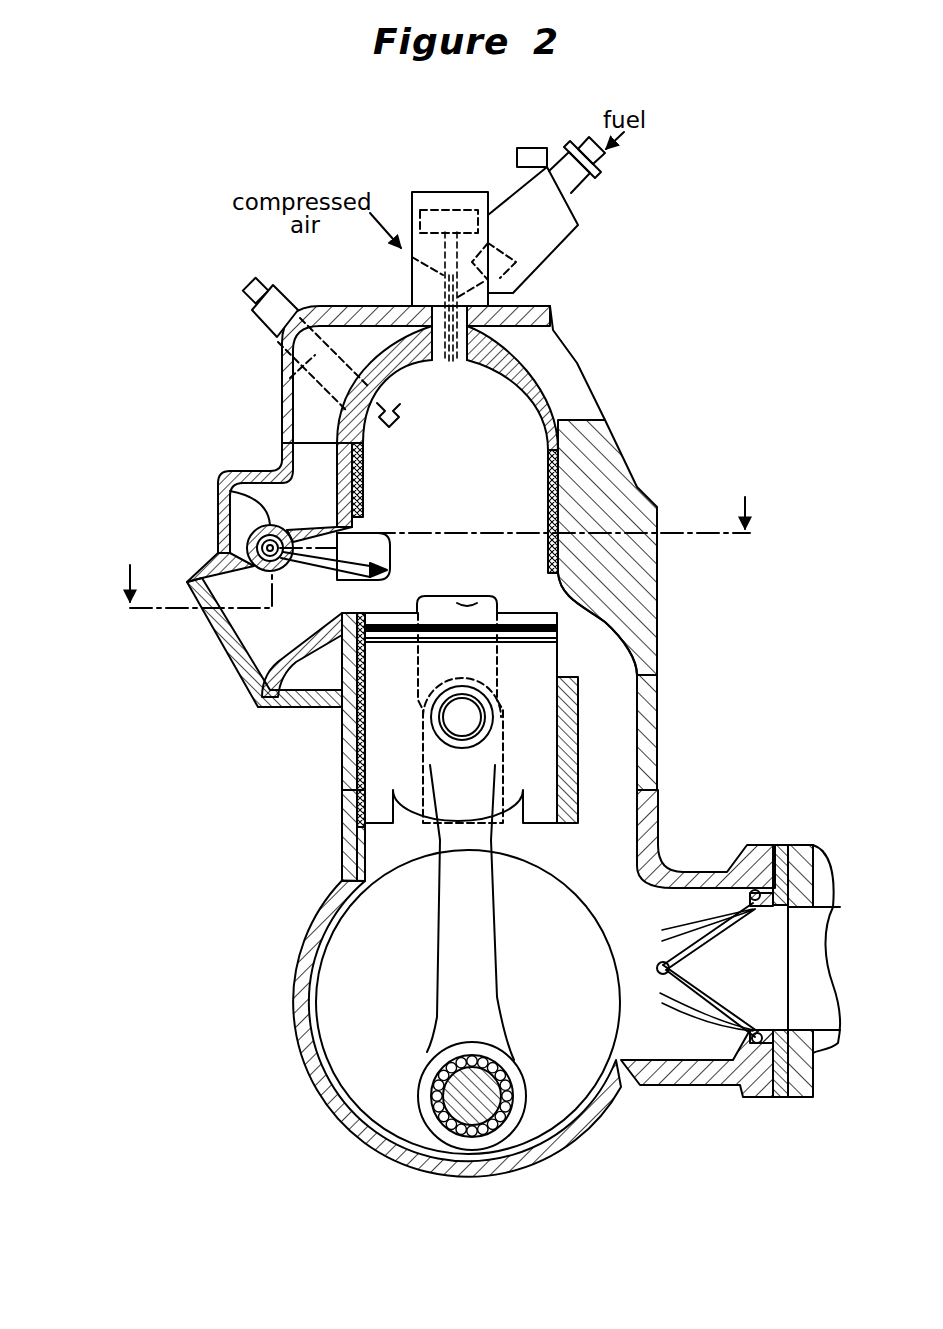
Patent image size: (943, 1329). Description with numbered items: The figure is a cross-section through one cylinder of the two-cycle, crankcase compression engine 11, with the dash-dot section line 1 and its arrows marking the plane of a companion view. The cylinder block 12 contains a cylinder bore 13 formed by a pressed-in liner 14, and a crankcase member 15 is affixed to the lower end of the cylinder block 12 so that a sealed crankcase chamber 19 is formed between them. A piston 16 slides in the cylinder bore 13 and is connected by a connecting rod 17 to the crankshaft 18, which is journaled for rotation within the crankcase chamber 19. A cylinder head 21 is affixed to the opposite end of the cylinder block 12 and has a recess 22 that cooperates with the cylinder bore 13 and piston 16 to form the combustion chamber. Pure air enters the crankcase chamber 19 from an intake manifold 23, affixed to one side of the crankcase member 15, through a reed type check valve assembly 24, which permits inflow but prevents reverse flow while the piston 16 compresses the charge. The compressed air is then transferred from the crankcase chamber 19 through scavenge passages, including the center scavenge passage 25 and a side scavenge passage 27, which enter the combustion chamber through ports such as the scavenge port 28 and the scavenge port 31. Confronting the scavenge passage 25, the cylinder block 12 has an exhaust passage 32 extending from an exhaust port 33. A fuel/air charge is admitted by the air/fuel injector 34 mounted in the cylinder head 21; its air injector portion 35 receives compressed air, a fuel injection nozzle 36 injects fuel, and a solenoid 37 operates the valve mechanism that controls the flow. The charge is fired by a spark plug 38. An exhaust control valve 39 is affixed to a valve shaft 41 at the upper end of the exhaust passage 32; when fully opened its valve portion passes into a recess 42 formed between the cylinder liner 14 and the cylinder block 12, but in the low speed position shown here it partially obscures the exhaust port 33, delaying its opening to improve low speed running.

The engine 11 is at (682, 407).
The cylinder block 12 is at (342, 752).
The cylinder bore 13 is at (548, 457).
The cylinder liner 14 is at (562, 493).
The crankcase member 15 is at (296, 972).
The piston 16 is at (338, 867).
The connecting rod 17 is at (437, 937).
The crankshaft 18 is at (612, 1045).
The crankcase chamber 19 is at (330, 1046).
The cylinder head 21 is at (282, 412).
The recess 22 is at (474, 436).
The intake manifold 23 is at (803, 863).
The reed type check valve assembly 24 is at (660, 994).
The center scavenge passage 25 is at (610, 745).
The side scavenge passage 27 is at (493, 657).
The scavenge port 28 is at (551, 590).
The scavenge port 31 is at (487, 595).
The exhaust passage 32 is at (240, 668).
The exhaust port 33 is at (373, 600).
The air/fuel injector 34 is at (408, 206).
The air injector portion 35 is at (410, 262).
The fuel injection nozzle 36 is at (562, 238).
The solenoid 37 is at (442, 208).
The spark plug 38 is at (250, 288).
The exhaust control valve 39 is at (392, 560).
The valve shaft 41 is at (216, 494).
The recess 42 is at (365, 490).
The section line 1- 1 is at (428, 552).